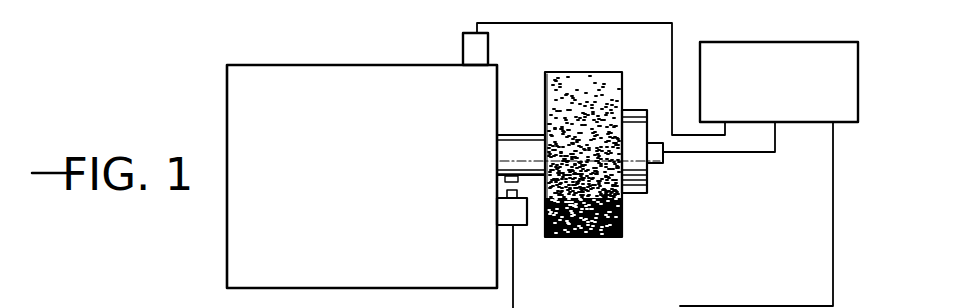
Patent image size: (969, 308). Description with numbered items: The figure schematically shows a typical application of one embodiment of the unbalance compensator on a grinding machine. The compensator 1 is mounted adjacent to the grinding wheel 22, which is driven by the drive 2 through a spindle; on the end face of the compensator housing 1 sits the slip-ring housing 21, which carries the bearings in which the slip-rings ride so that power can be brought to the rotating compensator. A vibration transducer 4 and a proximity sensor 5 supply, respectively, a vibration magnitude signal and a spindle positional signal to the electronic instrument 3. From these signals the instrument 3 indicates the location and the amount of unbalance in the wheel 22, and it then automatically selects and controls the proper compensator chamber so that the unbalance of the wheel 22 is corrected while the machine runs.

The compensator 1 is at (633, 195).
The drive 2 is at (241, 100).
The electronic instrument 3 is at (802, 122).
The vibration transducer 4 is at (488, 40).
The proximity sensor 5 is at (515, 208).
The slip-ring housing 21 is at (648, 175).
The grinding wheel 22 is at (594, 240).